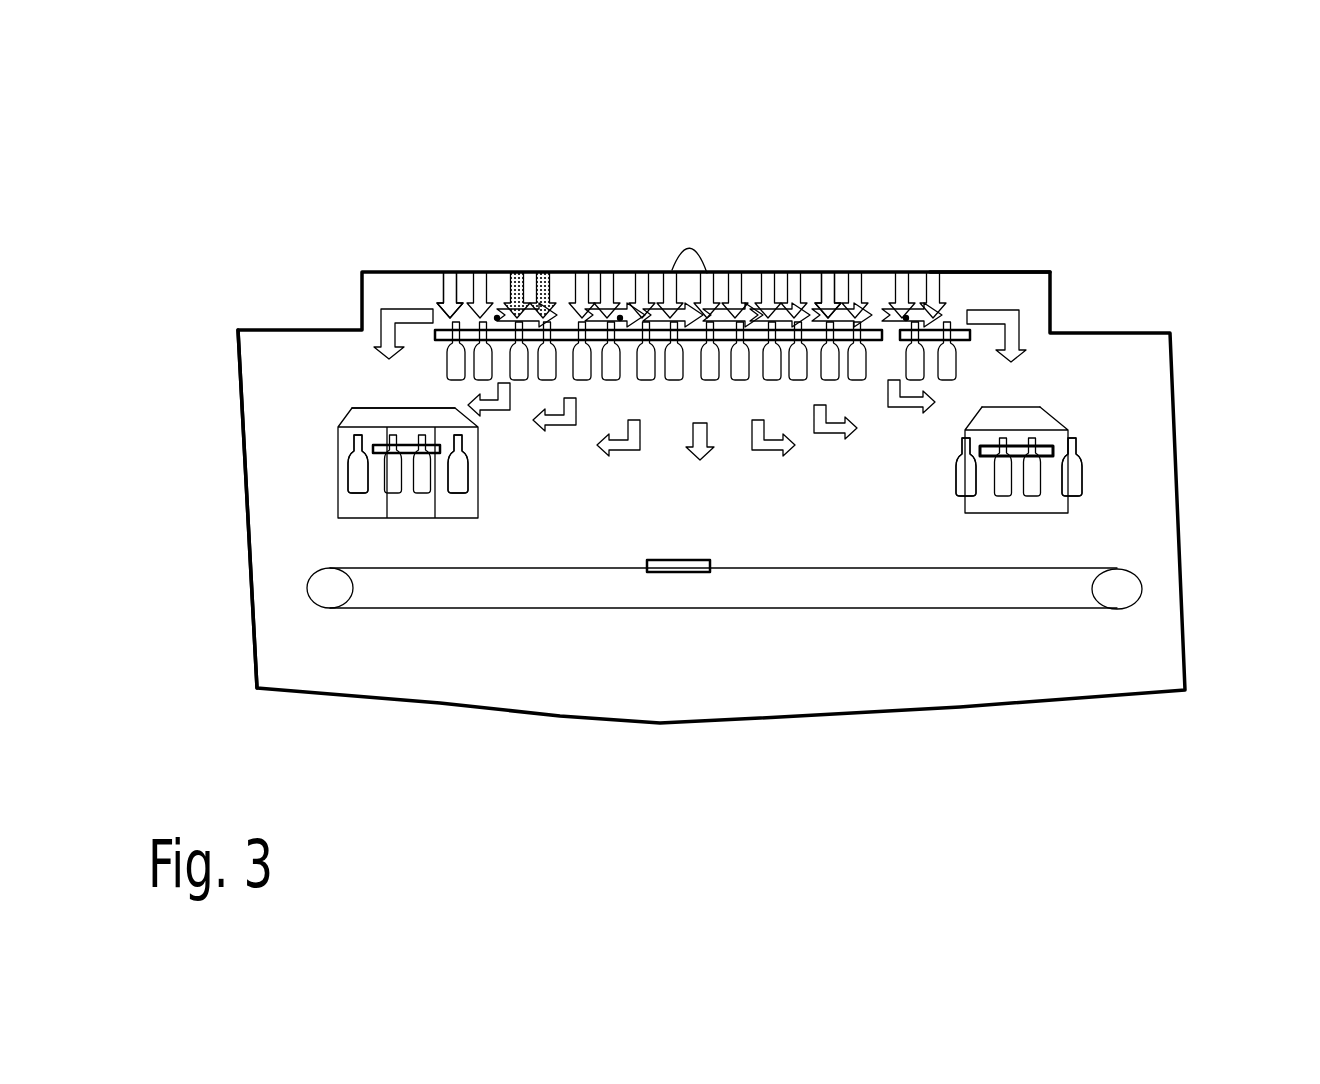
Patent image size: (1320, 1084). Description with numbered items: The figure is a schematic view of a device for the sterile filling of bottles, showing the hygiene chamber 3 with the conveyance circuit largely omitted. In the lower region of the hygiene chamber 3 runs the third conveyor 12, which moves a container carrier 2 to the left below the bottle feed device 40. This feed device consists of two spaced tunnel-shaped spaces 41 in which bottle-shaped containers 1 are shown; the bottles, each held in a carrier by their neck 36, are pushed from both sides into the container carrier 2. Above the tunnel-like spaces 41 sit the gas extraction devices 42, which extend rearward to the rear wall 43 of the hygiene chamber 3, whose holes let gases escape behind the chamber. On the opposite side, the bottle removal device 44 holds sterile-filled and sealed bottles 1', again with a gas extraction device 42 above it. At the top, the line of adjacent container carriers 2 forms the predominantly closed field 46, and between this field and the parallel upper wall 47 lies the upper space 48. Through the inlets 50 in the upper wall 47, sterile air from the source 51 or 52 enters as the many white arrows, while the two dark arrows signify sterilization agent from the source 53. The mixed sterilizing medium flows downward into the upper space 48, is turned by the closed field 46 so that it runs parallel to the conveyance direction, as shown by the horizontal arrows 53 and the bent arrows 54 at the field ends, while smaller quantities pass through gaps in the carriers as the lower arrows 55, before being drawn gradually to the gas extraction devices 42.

The containers 1 is at (310, 587).
The sterile-filled and sealed bottles 1' is at (987, 608).
The container carrier 2 is at (680, 565).
The hygiene chamber 3 is at (442, 704).
The third conveyor 12 is at (1072, 570).
The neck 36 is at (1030, 447).
The bottle feed device 40 is at (336, 452).
The tunnel-shaped spaces 41 is at (347, 477).
The gas extraction devices 42 is at (362, 400).
The rear wall 43 is at (258, 352).
The bottle removal device 44 is at (1078, 503).
The predominantly closed field 46 is at (848, 336).
The upper wall 47 is at (967, 272).
The upper space 48 is at (437, 292).
The inlets for sterilizing medium 50 is at (682, 248).
The source of sterile air 51 is at (937, 272).
The source of sterile air 52 is at (527, 272).
The source of sterilization agent 53 is at (497, 318).
The bent arrows 54 is at (393, 310).
The lower arrows 55 is at (690, 428).